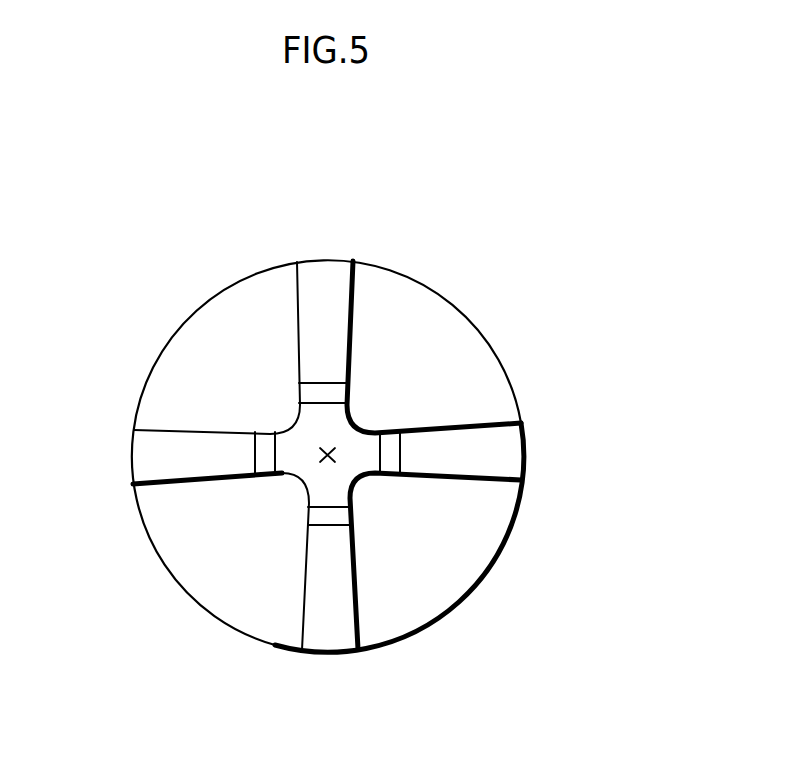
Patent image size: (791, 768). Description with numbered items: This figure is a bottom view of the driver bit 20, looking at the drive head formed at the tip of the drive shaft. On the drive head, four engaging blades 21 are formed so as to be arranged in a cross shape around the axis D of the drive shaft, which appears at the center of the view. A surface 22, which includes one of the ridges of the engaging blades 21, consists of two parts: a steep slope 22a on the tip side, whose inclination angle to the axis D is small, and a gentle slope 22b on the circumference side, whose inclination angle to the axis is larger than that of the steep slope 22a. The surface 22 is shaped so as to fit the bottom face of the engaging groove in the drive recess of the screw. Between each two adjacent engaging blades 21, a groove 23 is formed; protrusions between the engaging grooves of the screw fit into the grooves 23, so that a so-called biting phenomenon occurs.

The driver bit 20 is at (98, 279).
The engaging blades 21 is at (467, 480).
The surface 22 is at (549, 386).
The steep slope 22a is at (389, 447).
The gentle slope 22b is at (455, 450).
The groove 23 is at (297, 425).
The axis D is at (335, 452).